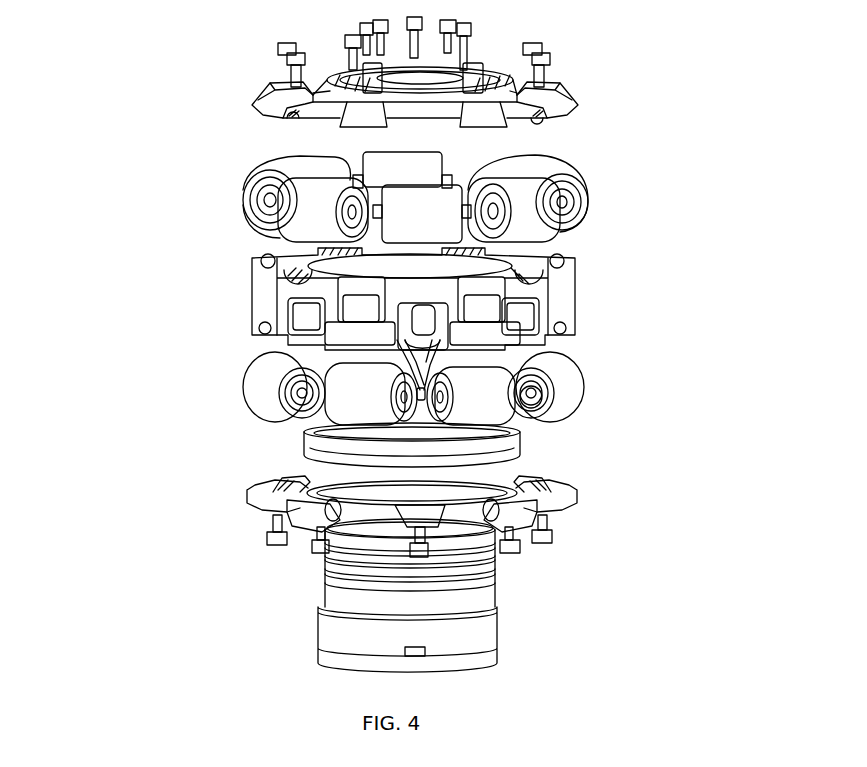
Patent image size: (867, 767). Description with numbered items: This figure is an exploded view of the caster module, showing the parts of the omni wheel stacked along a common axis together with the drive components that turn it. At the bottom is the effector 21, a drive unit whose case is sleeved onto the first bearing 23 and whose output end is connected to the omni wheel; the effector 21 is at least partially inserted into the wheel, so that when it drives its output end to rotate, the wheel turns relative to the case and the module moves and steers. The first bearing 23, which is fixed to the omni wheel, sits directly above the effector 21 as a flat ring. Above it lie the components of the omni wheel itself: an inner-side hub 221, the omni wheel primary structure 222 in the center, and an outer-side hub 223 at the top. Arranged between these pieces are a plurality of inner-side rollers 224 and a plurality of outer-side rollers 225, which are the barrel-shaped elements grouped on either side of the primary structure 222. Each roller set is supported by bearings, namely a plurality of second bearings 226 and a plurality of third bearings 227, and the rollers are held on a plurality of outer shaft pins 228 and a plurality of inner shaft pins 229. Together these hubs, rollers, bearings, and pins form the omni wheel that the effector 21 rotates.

The effector 21 is at (335, 655).
The first bearing 23 is at (312, 460).
The inner-side hub 221 is at (268, 515).
The omni wheel primary structure 222 is at (265, 320).
The outer-side hub 223 is at (268, 85).
The inner-side rollers 224 is at (568, 378).
The outer-side rollers 225 is at (545, 212).
The second bearings 226 is at (503, 202).
The third bearings 227 is at (547, 402).
The outer shaft pins 228 is at (505, 221).
The inner shaft pins 229 is at (535, 397).